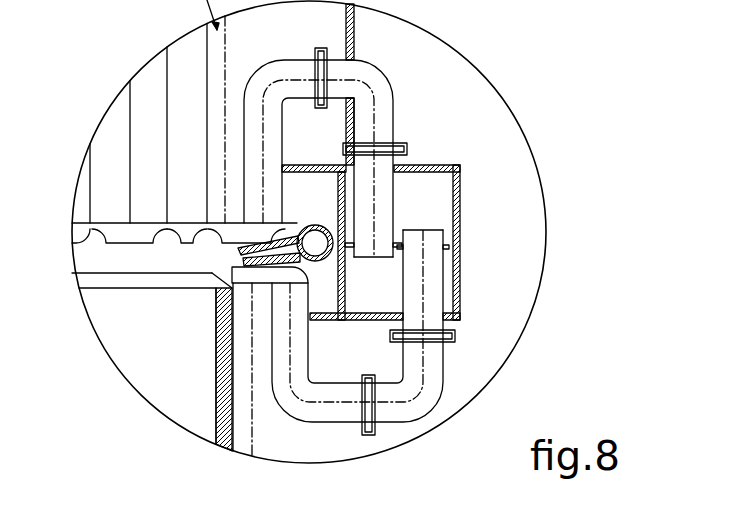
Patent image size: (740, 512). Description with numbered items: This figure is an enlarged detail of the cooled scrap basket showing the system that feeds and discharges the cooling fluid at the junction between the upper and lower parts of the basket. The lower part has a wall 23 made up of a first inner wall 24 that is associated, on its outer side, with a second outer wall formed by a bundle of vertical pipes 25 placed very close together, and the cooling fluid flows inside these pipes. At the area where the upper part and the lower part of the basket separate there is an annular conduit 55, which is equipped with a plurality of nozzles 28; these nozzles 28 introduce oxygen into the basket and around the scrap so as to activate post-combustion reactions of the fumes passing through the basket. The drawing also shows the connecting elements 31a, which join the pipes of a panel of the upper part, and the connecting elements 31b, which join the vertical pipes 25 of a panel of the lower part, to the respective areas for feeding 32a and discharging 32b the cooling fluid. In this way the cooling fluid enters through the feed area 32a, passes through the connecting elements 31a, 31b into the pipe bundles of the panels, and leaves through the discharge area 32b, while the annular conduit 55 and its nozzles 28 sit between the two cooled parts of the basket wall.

The wall 23 is at (214, 374).
The first inner wall 24 is at (223, 418).
The vertical pipes 25 is at (262, 450).
The nozzles 28 is at (238, 248).
The annular conduit 55 is at (306, 227).
The connecting elements 31a is at (373, 80).
The connecting elements 31b is at (432, 380).
The feed area 32a is at (430, 200).
The discharge area 32b is at (378, 285).